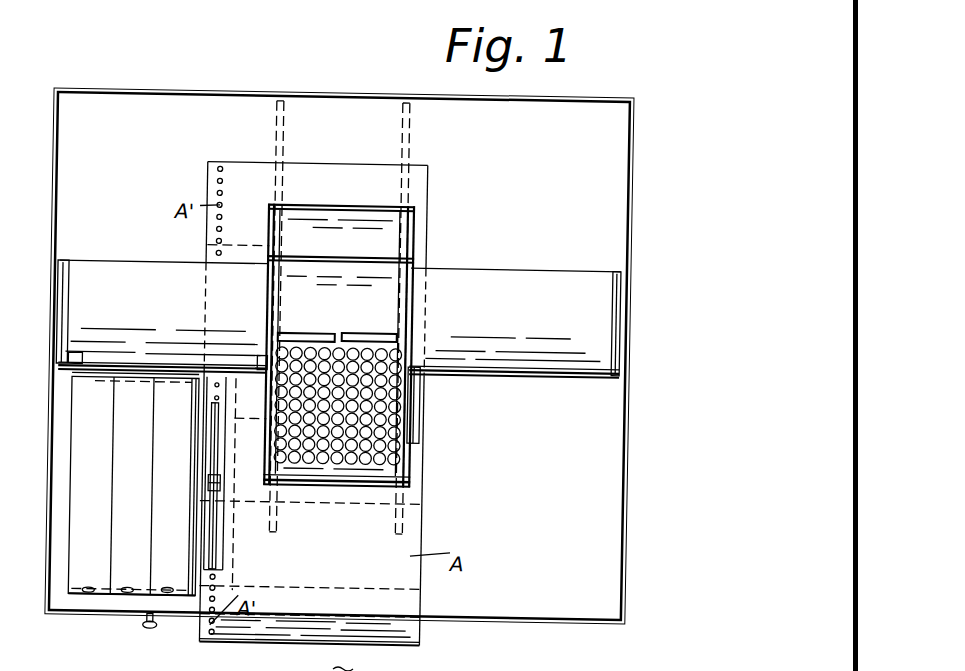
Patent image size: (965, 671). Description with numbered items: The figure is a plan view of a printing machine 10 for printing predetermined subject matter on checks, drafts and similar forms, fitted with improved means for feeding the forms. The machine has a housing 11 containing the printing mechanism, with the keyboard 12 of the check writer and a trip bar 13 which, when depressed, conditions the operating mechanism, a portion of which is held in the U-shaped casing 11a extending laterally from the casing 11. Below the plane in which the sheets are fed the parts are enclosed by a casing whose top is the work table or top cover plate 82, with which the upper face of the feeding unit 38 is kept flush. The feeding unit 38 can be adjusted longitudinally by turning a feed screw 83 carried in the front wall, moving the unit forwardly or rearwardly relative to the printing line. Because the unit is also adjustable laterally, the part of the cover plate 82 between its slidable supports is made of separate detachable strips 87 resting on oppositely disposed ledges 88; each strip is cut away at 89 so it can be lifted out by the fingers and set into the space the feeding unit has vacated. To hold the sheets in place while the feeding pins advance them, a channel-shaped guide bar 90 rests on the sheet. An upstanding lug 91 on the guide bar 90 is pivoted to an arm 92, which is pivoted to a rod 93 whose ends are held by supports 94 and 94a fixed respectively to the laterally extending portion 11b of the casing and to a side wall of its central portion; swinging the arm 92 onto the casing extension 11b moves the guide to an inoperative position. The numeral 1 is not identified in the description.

The machine 1 is at (543, 434).
The printing machine 10 is at (620, 432).
The housing 11 is at (398, 282).
The U-shaped casing 11a is at (556, 269).
The laterally extending portion of the casing 11b is at (132, 262).
The keyboard 12 is at (401, 447).
The trip bar 13 is at (418, 387).
The feeding unit 38 is at (203, 532).
The top cover plate 82 is at (539, 520).
The feed screw 83 is at (166, 622).
The detachable strips 87 is at (133, 485).
The ledges 88 is at (82, 596).
The cut-away portion 89 is at (176, 594).
The guide bar 90 is at (230, 535).
The upstanding lug 91 is at (222, 474).
The arm 92 is at (228, 452).
The rod 93 is at (98, 372).
The support 94 is at (74, 356).
The support 94a is at (268, 353).